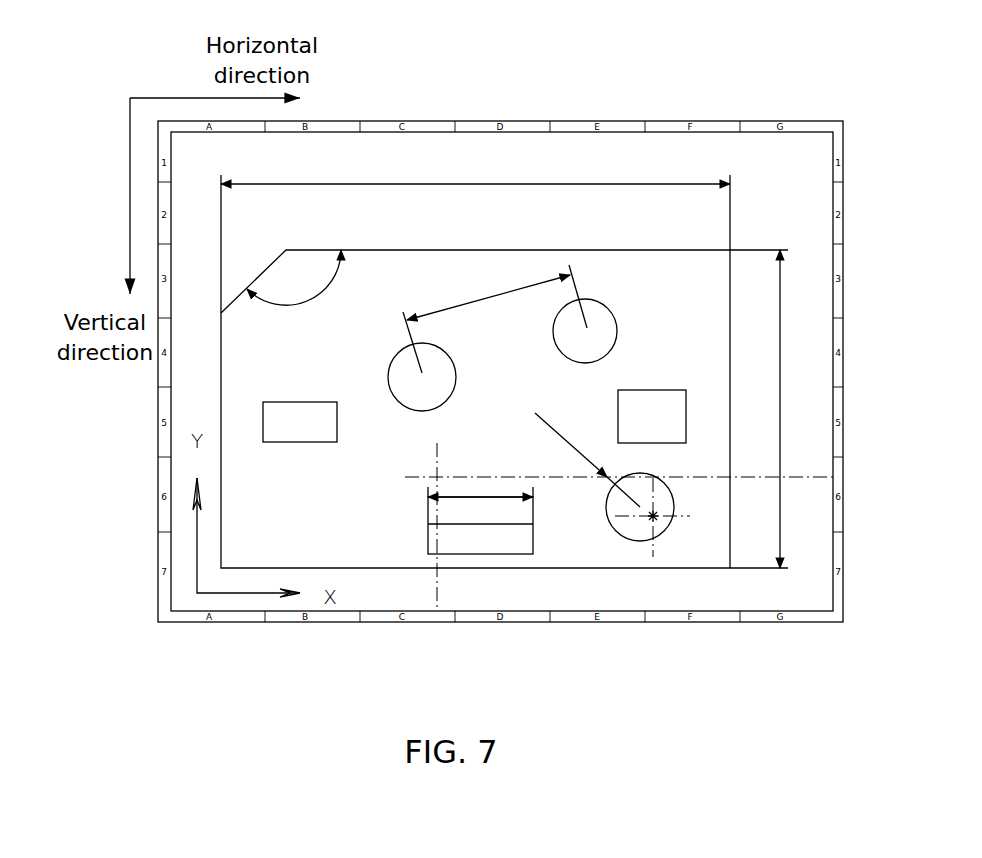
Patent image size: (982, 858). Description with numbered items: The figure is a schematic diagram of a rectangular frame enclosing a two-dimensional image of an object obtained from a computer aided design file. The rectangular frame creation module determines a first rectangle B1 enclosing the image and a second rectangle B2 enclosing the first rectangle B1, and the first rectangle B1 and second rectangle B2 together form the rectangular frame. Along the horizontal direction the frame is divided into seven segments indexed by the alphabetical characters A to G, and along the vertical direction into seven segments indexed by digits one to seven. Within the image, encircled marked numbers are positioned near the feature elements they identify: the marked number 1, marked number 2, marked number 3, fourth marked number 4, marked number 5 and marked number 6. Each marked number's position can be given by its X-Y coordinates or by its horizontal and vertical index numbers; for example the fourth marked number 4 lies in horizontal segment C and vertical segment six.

The first rectangle B1 is at (617, 121).
The second rectangle B2 is at (523, 121).
The marked number 1 is at (475, 175).
The marked number 2 is at (502, 338).
The marked number 3 is at (296, 295).
The fourth marked number 4 is at (479, 510).
The marked number 5 is at (612, 473).
The marked number 6 is at (763, 409).